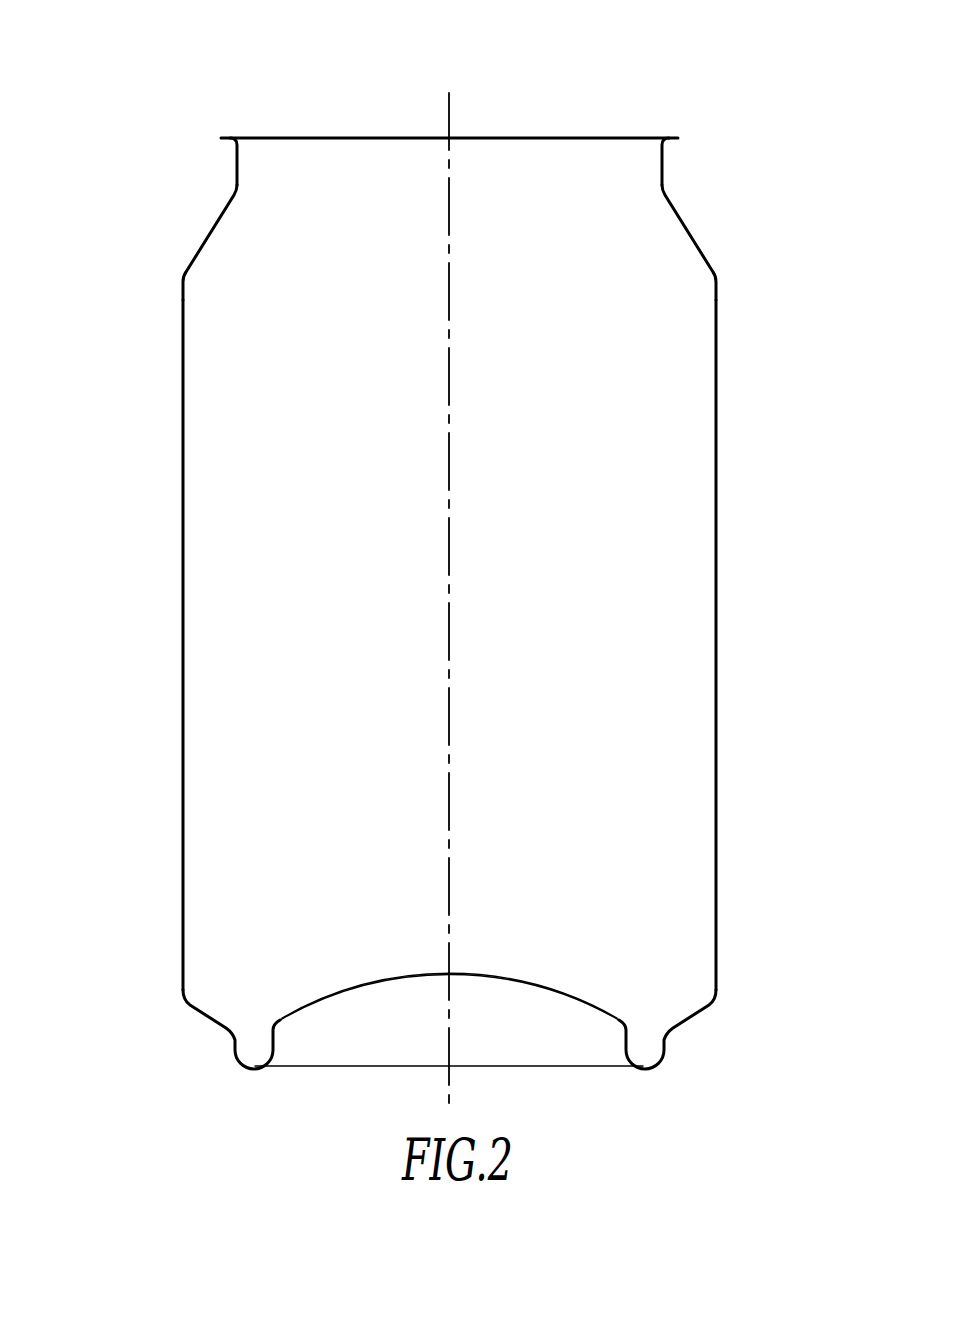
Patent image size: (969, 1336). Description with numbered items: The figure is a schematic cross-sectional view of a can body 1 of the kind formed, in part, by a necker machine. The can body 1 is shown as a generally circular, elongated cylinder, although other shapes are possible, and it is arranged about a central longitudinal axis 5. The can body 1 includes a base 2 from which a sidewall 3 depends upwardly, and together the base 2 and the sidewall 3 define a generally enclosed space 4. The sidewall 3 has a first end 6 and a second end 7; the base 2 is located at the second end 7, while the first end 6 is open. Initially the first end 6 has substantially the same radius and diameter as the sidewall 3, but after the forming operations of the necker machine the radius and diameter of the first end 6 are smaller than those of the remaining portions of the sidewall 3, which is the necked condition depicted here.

The can body 1 is at (448, 561).
The base 2 is at (475, 979).
The sidewall 3 is at (716, 598).
The enclosed space 4 is at (374, 165).
The longitudinal axis 5 is at (455, 122).
The first end 6 is at (762, 158).
The second end 7 is at (125, 916).